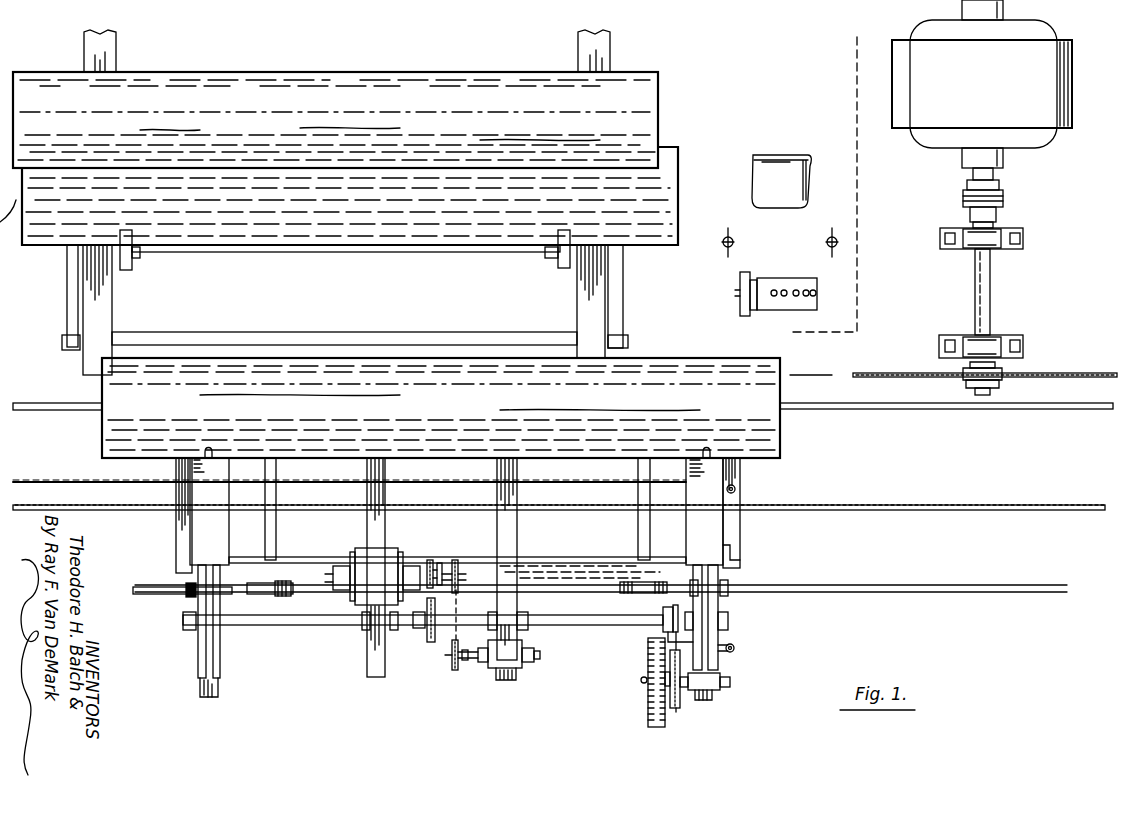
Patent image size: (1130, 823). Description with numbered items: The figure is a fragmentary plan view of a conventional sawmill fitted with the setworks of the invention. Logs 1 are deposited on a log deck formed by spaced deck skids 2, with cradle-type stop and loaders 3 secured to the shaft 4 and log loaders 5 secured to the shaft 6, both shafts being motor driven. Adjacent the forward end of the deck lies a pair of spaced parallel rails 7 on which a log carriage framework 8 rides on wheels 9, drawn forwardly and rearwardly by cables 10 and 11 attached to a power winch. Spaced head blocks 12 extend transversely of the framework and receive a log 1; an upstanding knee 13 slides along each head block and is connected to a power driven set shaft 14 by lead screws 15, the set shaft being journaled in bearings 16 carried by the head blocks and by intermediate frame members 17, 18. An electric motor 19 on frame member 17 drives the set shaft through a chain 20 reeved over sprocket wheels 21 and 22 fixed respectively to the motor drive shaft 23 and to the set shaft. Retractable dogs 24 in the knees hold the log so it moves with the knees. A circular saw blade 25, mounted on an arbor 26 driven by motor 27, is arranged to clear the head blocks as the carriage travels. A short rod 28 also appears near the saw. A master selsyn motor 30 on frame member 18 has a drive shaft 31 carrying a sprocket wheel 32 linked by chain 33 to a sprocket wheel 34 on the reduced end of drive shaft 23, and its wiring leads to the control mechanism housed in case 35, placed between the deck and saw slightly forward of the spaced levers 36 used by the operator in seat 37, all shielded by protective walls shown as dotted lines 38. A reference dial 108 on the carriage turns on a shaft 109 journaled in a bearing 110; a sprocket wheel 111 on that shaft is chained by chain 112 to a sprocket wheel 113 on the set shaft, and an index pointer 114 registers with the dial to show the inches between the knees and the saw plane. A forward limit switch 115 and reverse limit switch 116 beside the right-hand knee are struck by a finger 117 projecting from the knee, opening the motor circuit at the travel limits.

The log 1 is at (262, 70).
The deck skid 2 is at (112, 316).
The cradle-type stop and loader 3 is at (132, 268).
The shaft 4 is at (246, 252).
The log loader 5 is at (66, 312).
The shaft 6 is at (360, 312).
The rail 7 is at (64, 412).
The log carriage framework 8 is at (176, 503).
The wheel 9 is at (186, 590).
The cable 10 is at (985, 505).
The cable 11 is at (110, 481).
The head block 12 is at (198, 662).
The knee 13 is at (198, 540).
The set shaft 14 is at (280, 626).
The lead screw 15 is at (210, 697).
The bearing 16 is at (188, 630).
The intermediate frame member 17 is at (375, 678).
The intermediate frame member 18 is at (508, 680).
The electric motor 19 is at (372, 576).
The chain 20 is at (426, 635).
The sprocket wheel 21 is at (440, 563).
The sprocket wheel 22 is at (431, 642).
The drive shaft 23 is at (430, 560).
The retractable dog 24 is at (208, 458).
The cutting saw blade 25 is at (1050, 372).
The arbor 26 is at (990, 270).
The motor 27 is at (982, 114).
The rod 28 is at (800, 378).
The master selsyn motor 30 is at (520, 665).
The drive shaft 31 is at (468, 660).
The sprocket wheel 32 is at (454, 670).
The chain 33 is at (458, 605).
The sprocket wheel 34 is at (456, 560).
The case 35 is at (818, 302).
The lever 36 is at (828, 242).
The seat 37 is at (760, 192).
The protective wall 38 is at (858, 189).
The reference dial 108 is at (650, 720).
The shaft 109 is at (642, 682).
The bearing 110 is at (722, 686).
The sprocket wheel 111 is at (680, 705).
The chain 112 is at (676, 712).
The sprocket wheel 113 is at (676, 593).
The index pointer 114 is at (666, 638).
The forward limit switch 115 is at (736, 489).
The reverse limit switch 116 is at (735, 648).
The finger 117 is at (740, 563).